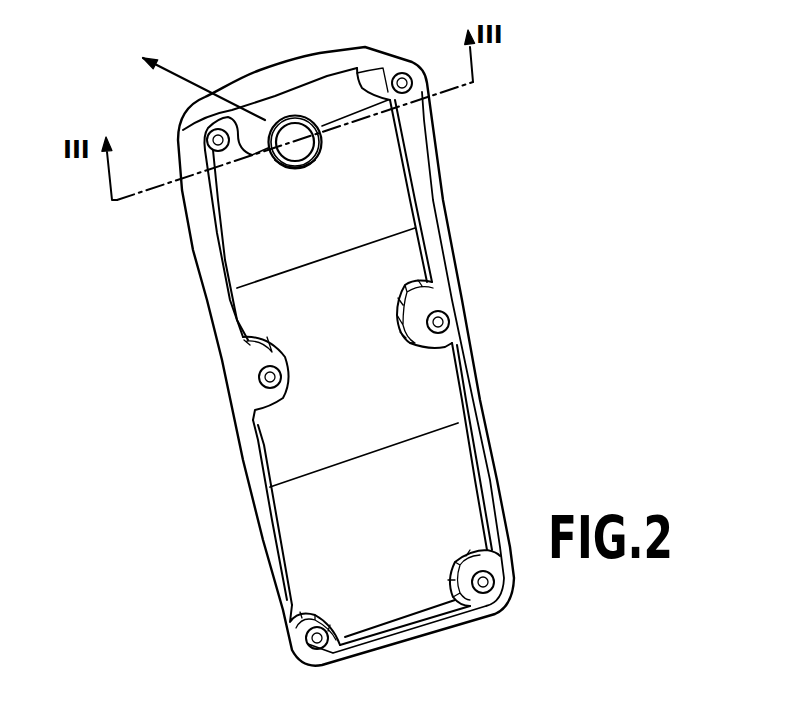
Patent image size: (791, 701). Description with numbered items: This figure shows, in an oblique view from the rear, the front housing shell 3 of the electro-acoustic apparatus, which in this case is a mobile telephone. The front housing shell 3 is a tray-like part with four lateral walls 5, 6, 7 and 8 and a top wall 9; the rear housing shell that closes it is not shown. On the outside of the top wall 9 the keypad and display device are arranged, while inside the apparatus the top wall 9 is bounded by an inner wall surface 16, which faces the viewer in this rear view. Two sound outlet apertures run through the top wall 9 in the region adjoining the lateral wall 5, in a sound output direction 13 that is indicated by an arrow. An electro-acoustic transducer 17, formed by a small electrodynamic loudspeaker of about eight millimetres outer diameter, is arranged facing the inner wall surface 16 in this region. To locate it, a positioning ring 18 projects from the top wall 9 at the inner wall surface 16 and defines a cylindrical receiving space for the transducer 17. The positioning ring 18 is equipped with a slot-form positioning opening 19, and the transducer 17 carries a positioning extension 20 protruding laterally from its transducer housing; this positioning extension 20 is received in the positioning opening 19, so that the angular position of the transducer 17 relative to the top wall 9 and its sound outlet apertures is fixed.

The front housing shell 3 is at (447, 170).
The lateral wall 5 is at (287, 75).
The lateral wall 6 is at (225, 322).
The lateral wall 7 is at (398, 627).
The lateral wall 8 is at (435, 257).
The top wall 9 is at (453, 447).
The sound output direction 13 is at (182, 82).
The inner wall surface 16 is at (243, 240).
The electro-acoustic transducer 17 is at (300, 147).
The positioning ring 18 is at (283, 113).
The positioning opening 19 is at (300, 168).
The positioning extension 20 is at (294, 167).